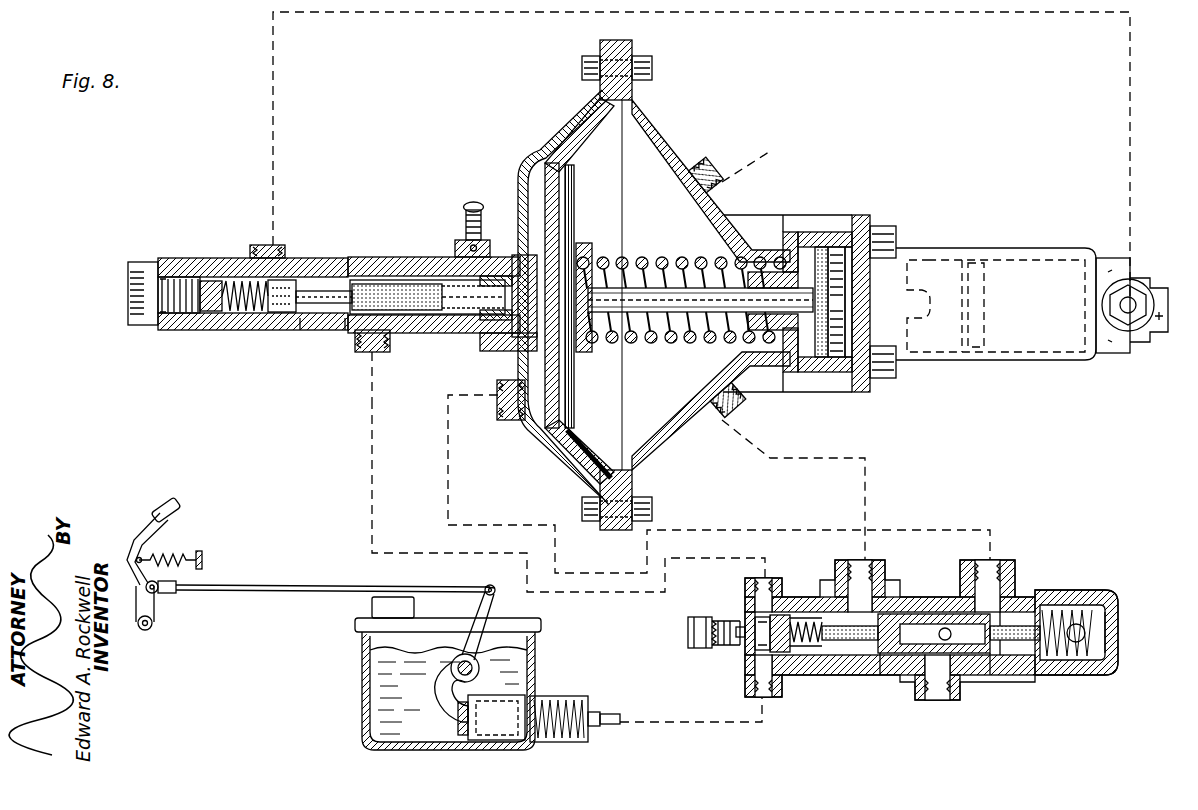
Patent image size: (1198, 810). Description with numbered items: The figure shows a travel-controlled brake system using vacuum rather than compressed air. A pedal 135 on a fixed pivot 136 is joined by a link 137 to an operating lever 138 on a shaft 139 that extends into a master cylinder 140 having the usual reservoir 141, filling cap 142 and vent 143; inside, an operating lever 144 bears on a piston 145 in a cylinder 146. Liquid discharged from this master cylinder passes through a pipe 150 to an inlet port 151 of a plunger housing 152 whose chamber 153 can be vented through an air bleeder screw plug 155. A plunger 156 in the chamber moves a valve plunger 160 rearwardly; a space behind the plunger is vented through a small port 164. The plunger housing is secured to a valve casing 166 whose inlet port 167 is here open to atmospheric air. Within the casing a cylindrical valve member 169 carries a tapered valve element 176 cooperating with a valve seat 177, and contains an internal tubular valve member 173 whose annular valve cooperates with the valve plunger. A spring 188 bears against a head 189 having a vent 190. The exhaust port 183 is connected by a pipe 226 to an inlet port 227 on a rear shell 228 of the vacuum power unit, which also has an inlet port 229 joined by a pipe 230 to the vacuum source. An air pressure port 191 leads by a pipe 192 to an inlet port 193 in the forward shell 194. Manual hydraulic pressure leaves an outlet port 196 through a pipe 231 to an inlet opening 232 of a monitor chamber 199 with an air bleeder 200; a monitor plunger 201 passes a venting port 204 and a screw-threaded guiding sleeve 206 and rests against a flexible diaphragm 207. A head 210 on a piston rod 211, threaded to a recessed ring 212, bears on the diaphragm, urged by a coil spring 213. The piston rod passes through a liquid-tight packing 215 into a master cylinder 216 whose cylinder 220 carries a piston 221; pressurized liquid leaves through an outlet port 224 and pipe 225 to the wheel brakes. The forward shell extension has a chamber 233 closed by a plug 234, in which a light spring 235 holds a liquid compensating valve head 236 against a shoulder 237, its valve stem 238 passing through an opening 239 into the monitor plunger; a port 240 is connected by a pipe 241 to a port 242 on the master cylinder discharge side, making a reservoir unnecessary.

The pedal 135 is at (170, 512).
The fixed pivot 136 is at (145, 631).
The link 137 is at (244, 592).
The operating lever 138 is at (480, 603).
The shaft 139 is at (473, 675).
The master cylinder 140 is at (362, 637).
The reservoir 141 is at (372, 694).
The filling cap 142 is at (372, 605).
The vent 143 is at (506, 636).
The operating lever 144 is at (442, 684).
The piston 145 is at (458, 727).
The cylinder 146 is at (560, 696).
The pipe 150 is at (655, 723).
The inlet port 151 is at (762, 677).
The plunger housing 152 is at (750, 600).
The chamber 153 is at (757, 648).
The air bleeder screw plug 155 is at (716, 626).
The plunger 156 is at (794, 654).
The valve plunger 160 is at (848, 655).
The small port 164 is at (818, 612).
The valve casing 166 is at (893, 678).
The inlet port 167 is at (944, 700).
The cylindrical valve member 169 is at (910, 676).
The internal tubular valve member 173 is at (914, 596).
The tapered valve element 176 is at (978, 676).
The valve seat 177 is at (970, 684).
The exhaust port 183 is at (856, 574).
The spring 188 is at (1084, 604).
The head 189 is at (1102, 677).
The vent 190 is at (1110, 622).
The air pressure port 191 is at (990, 566).
The pipe 192 is at (448, 458).
The inlet port 193 is at (500, 402).
The forward shell 194 is at (551, 462).
The outlet port 196 is at (762, 580).
The monitor chamber 199 is at (410, 262).
The air bleeder 200 is at (466, 208).
The monitor plunger 201 is at (452, 308).
The venting port 204 is at (488, 322).
The screw-threaded guiding sleeve 206 is at (510, 340).
The flexible diaphragm 207 is at (546, 186).
The head 210 is at (563, 372).
The piston rod 211 is at (666, 314).
The recessed ring 212 is at (594, 262).
The coil spring 213 is at (653, 257).
The liquid-tight packing 215 is at (822, 250).
The master cylinder 216 is at (1070, 360).
The cylinder 220 is at (1038, 270).
The piston 221 is at (939, 262).
The outlet port 224 is at (1158, 333).
The pipe 225 is at (1170, 288).
The pipe 226 is at (810, 458).
The inlet port 227 is at (722, 412).
The rear shell 228 is at (672, 455).
The inlet port 229 is at (720, 190).
The pipe 230 is at (752, 160).
The pipe 231 is at (370, 431).
The inlet opening 232 is at (373, 372).
The chamber 233 is at (238, 268).
The plug 234 is at (168, 266).
The light spring 235 is at (230, 314).
The liquid compensating valve head 236 is at (288, 280).
The shoulder 237 is at (300, 330).
The valve stem 238 is at (340, 290).
The opening 239 is at (364, 360).
The port 240 is at (268, 244).
The pipe 241 is at (273, 142).
The port 242 is at (1128, 332).